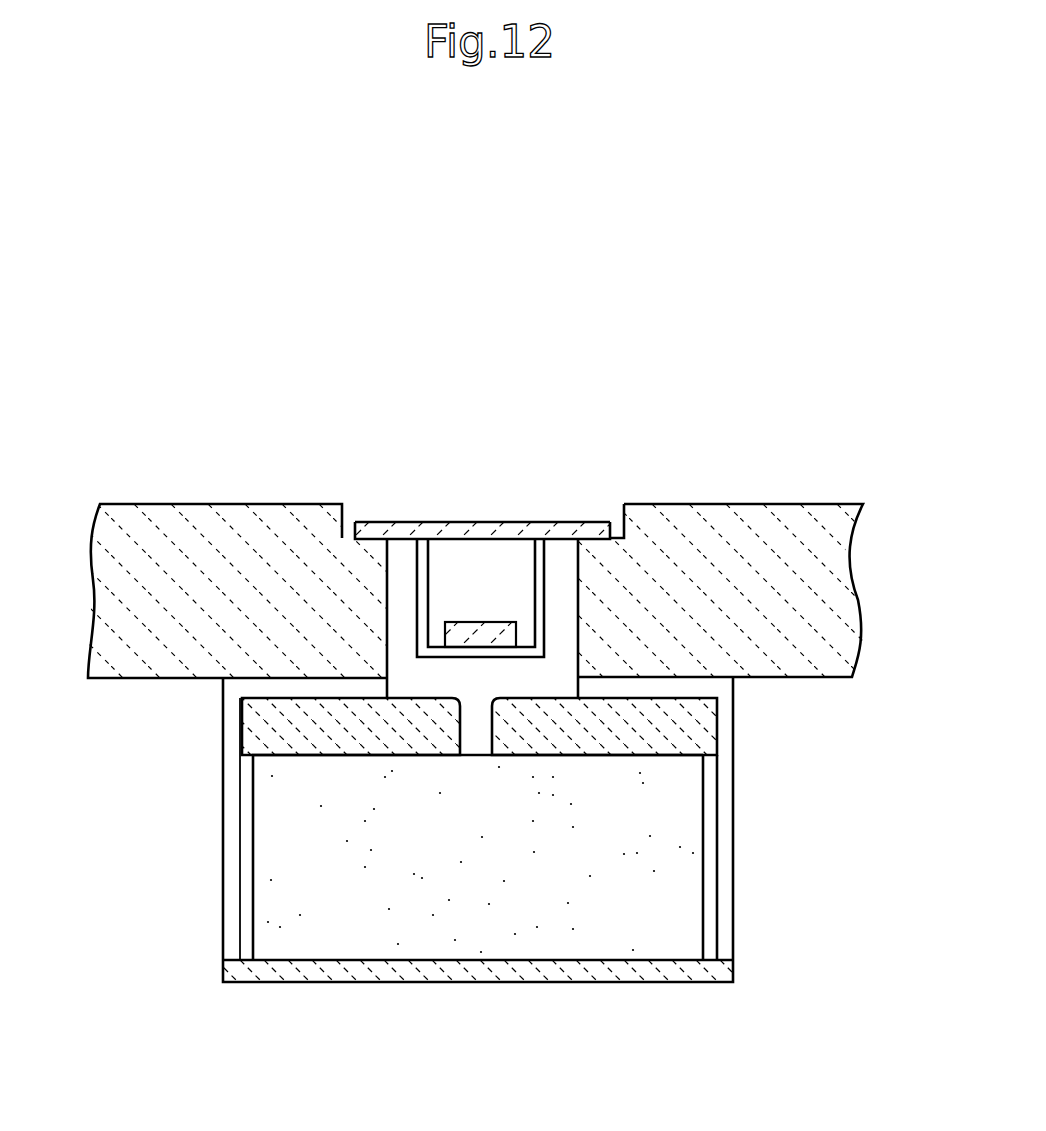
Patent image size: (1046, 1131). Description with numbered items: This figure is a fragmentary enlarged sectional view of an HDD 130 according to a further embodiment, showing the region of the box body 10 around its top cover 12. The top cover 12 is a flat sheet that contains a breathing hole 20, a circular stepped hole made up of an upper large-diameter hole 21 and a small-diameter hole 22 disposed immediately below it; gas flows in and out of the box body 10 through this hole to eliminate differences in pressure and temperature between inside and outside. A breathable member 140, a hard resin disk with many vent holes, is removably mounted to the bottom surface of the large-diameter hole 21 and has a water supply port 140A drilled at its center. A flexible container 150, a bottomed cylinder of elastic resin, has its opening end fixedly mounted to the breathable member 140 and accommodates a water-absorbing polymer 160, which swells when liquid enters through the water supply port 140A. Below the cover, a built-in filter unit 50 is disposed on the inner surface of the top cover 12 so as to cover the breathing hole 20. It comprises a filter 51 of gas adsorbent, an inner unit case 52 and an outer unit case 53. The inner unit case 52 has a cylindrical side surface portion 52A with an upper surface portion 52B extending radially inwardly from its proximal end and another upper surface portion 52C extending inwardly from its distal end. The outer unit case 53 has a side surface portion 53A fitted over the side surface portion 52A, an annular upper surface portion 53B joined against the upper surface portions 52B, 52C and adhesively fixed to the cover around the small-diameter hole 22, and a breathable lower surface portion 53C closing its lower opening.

The box body 10 is at (221, 518).
The top cover 12 is at (195, 517).
The breathing hole 20 is at (455, 519).
The large-diameter hole 21 is at (620, 528).
The small-diameter hole 22 is at (388, 578).
The HDD 130 is at (734, 505).
The breathable member 140 is at (481, 448).
The water supply port 140A is at (490, 530).
The flexible container 150 is at (417, 578).
The water-absorbing polymer 160 is at (495, 622).
The built-in filter unit 50 is at (507, 743).
The filter 51 is at (270, 772).
The inner unit case 52 is at (537, 689).
The side surface portion 52A is at (708, 798).
The upper surface portion 52B is at (310, 715).
The upper surface portion 52C is at (705, 715).
The outer unit case 53 is at (507, 821).
The side surface portion 53A is at (230, 932).
The annular upper surface portion 53B is at (710, 680).
The lower surface portion 53C is at (617, 975).